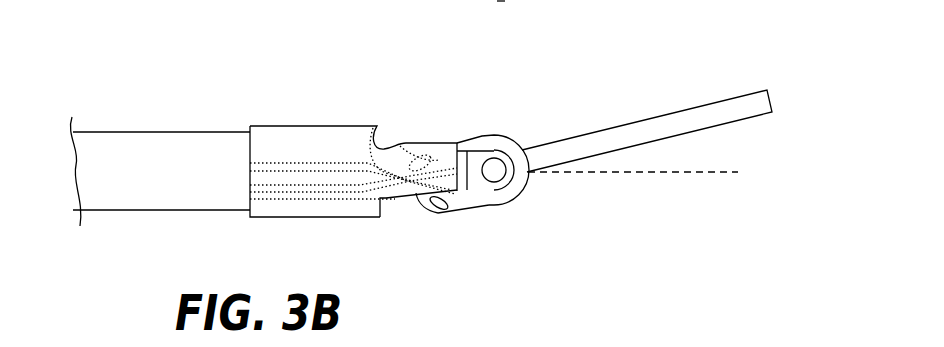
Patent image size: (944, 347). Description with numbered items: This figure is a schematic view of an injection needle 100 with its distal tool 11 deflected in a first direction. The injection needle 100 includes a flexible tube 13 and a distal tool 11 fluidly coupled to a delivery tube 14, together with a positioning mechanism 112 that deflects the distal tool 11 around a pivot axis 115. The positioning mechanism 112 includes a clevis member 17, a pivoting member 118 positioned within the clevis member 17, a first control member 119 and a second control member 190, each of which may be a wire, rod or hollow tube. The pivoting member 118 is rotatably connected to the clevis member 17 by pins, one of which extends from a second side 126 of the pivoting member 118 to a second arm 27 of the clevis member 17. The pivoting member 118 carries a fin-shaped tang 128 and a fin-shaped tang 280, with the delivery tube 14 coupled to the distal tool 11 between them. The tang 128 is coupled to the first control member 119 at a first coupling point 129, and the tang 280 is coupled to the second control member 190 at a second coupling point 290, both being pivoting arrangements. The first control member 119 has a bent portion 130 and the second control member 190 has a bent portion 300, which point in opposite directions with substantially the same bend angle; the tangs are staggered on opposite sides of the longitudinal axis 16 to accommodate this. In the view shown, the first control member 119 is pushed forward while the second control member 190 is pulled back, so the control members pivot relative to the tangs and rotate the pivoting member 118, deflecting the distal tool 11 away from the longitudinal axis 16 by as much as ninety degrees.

The injection needle 100 is at (136, 62).
The distal tool 11 is at (723, 98).
The flexible tube 13 is at (152, 211).
The delivery tube 14 is at (400, 202).
The longitudinal axis 16 is at (738, 171).
The clevis member 17 is at (265, 122).
The second arm 27 is at (418, 161).
The positioning mechanism 112 is at (329, 88).
The pivot axis 115 is at (506, 175).
The pivoting member 118 is at (507, 132).
The first control member 119 is at (299, 161).
The second side 126 is at (479, 116).
The tang 128 is at (470, 207).
The first coupling point 129 is at (418, 157).
The bent portion 130 is at (373, 164).
The second control member 190 is at (296, 203).
The tang 280 is at (455, 141).
The second coupling point 290 is at (436, 216).
The bent portion 300 is at (369, 201).